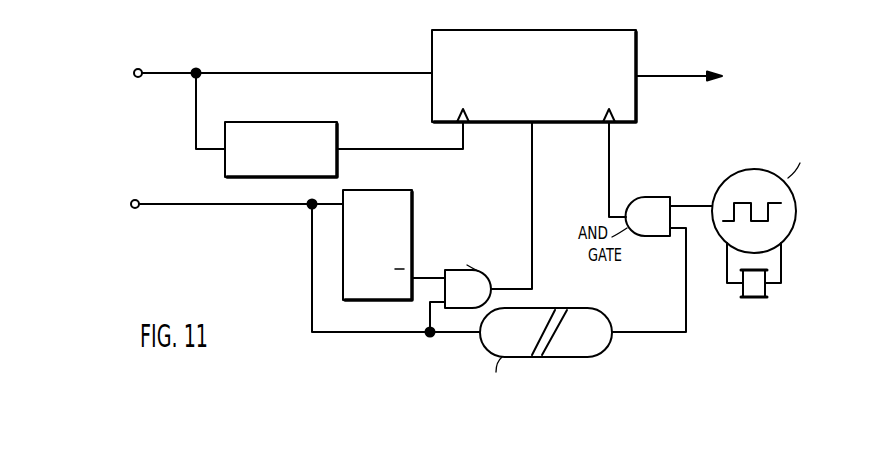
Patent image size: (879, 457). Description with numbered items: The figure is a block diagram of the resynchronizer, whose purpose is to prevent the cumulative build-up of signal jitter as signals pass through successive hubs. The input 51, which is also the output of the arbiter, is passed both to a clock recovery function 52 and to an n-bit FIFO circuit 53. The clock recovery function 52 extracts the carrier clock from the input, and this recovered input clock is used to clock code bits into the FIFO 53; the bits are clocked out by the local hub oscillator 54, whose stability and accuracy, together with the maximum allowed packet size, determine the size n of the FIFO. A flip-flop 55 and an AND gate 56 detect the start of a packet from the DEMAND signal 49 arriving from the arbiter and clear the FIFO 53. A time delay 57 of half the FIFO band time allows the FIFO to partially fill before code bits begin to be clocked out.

The DEMAND signal 49 is at (137, 199).
The input 51 is at (139, 68).
The clock recovery function 52 is at (300, 121).
The n-bit FIFO circuit 53 is at (590, 30).
The local oscillator circuit 54 is at (713, 190).
The flip-flop 55 is at (387, 190).
The AND gate 56 is at (446, 268).
The time delay 57 is at (548, 308).